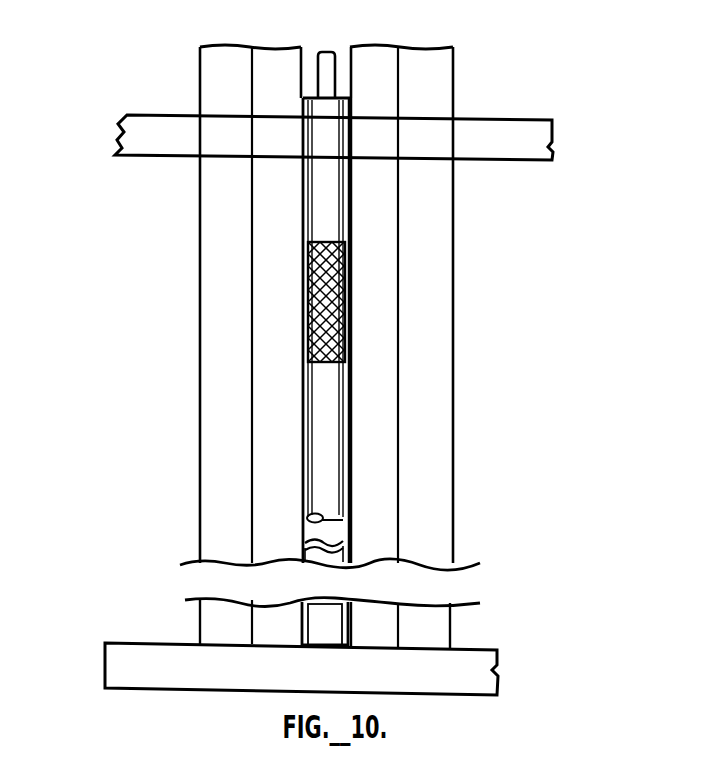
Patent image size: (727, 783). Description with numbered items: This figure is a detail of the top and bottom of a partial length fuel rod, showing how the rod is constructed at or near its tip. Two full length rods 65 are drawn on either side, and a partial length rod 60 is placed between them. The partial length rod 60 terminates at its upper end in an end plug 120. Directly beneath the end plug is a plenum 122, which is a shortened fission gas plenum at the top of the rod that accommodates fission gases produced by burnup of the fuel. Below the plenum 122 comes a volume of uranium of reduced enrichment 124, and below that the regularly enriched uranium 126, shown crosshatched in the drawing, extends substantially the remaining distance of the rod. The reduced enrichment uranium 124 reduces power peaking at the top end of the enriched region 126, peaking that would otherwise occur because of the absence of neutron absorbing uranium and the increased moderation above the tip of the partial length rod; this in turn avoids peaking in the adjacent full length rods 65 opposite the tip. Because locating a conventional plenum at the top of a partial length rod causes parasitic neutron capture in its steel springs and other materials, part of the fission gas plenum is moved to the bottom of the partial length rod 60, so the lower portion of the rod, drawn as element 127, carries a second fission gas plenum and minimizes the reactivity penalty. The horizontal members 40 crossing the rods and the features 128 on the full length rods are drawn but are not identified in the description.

The support beam 40 is at (553, 143).
The full length rods 65 is at (200, 243).
The groove 128 is at (252, 313).
The end plug 120 is at (345, 97).
The plenum 122 is at (353, 205).
The uranium of reduced enrichment 124 is at (348, 355).
The regularly enriched uranium 126 is at (352, 452).
The partial length rod 60 is at (300, 490).
The lower insert 127 is at (322, 622).